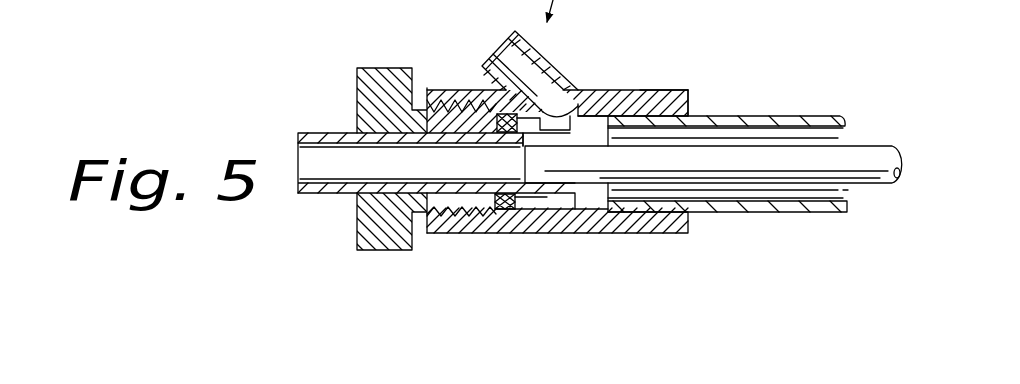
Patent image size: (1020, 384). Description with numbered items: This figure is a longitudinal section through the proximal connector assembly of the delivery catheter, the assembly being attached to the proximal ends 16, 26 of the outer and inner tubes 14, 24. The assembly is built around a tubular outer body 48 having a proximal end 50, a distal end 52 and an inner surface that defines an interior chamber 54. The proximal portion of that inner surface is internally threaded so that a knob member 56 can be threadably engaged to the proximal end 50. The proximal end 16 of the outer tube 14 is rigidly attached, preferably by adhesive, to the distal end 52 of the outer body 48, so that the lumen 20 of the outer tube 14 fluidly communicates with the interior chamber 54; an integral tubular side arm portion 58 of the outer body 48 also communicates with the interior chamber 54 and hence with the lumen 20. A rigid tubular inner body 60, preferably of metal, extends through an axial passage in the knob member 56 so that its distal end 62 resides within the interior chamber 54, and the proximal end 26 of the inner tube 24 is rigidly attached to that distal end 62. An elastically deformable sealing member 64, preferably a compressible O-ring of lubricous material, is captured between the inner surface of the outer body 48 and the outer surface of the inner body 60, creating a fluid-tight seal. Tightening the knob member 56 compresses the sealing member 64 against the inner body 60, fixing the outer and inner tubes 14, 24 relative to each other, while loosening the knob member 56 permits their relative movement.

The outer tube 14 is at (803, 108).
The proximal end 16 is at (655, 101).
The lumen 20 is at (848, 192).
The inner tube 24 is at (880, 142).
The proximal end 26 is at (516, 154).
The tubular outer body 48 is at (594, 238).
The proximal end 50 is at (426, 242).
The distal end 52 is at (701, 100).
The interior chamber 54 is at (600, 130).
The knob member 56 is at (357, 88).
The tubular side arm portion 58 is at (548, 66).
The tubular inner body 60 is at (328, 202).
The distal end 62 is at (566, 200).
The sealing member 64 is at (499, 210).